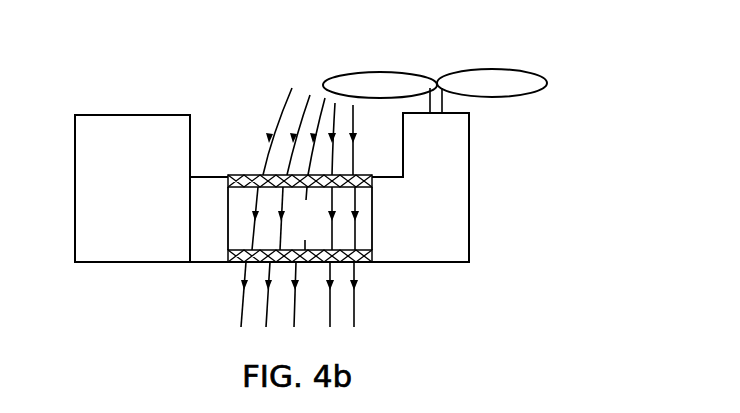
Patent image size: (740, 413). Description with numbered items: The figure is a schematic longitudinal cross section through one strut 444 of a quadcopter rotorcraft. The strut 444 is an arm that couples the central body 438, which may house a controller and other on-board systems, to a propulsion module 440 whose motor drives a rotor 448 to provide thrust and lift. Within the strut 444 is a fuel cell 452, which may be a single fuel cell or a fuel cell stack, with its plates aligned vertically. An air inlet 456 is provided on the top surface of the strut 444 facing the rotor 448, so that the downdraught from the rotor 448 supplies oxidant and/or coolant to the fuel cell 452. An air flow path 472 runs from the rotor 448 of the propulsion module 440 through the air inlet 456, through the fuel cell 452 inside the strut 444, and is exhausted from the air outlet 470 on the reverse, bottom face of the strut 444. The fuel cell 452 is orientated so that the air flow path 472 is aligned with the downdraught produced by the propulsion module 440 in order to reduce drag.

The central body 438 is at (138, 115).
The strut 444 is at (207, 228).
The propulsion module 440 is at (472, 182).
The rotor 448 is at (548, 97).
The fuel cell 452 is at (373, 233).
The air inlet 456 is at (248, 175).
The air flow path 472 is at (362, 257).
The air outlet 470 is at (228, 265).